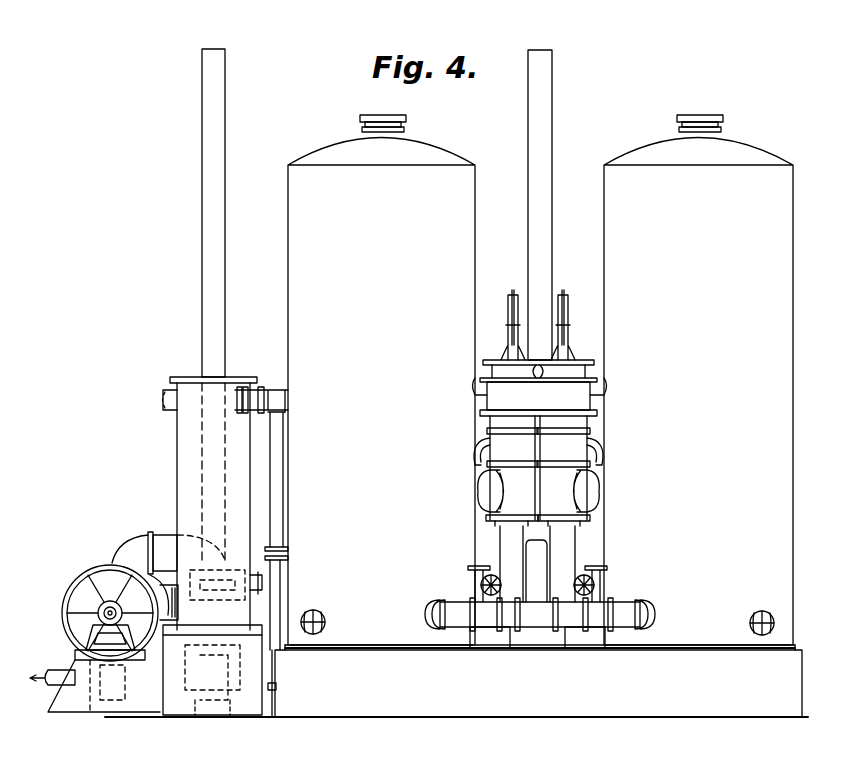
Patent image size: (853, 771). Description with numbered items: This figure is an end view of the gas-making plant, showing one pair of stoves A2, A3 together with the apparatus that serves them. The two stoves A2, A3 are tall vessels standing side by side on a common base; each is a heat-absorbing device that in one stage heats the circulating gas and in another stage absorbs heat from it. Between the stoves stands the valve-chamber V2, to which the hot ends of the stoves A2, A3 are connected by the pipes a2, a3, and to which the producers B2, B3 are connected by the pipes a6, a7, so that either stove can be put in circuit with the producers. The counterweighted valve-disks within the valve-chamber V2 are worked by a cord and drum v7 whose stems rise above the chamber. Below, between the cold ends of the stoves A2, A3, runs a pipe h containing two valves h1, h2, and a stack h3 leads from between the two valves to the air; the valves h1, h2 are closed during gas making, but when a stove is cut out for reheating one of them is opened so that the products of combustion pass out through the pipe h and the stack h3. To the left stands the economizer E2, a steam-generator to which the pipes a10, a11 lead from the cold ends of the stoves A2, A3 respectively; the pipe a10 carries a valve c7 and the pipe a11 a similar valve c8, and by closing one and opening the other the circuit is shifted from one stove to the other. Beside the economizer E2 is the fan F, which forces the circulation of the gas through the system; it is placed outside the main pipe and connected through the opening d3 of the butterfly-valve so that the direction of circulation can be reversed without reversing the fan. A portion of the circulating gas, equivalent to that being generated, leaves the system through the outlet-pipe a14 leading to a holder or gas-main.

The stove A2 is at (381, 380).
The stove A3 is at (698, 380).
The economizer E2 is at (213, 503).
The fan F is at (113, 638).
The valve-chamber V2 is at (540, 388).
The drum v7 is at (578, 318).
The pipe a10 is at (275, 395).
The pipe a11 is at (285, 508).
The pipe a6 is at (468, 455).
The pipe a7 is at (604, 455).
The pipe a2 is at (490, 491).
The pipe a3 is at (591, 491).
The outlet-pipe a14 is at (51, 657).
The valve c7 is at (282, 552).
The valve c8 is at (268, 546).
The opening d3 is at (145, 553).
The producer B2 is at (500, 564).
The producer B3 is at (575, 564).
The pipe h is at (558, 628).
The valve h1 is at (472, 582).
The valve h2 is at (603, 582).
The stack h3 is at (536, 571).